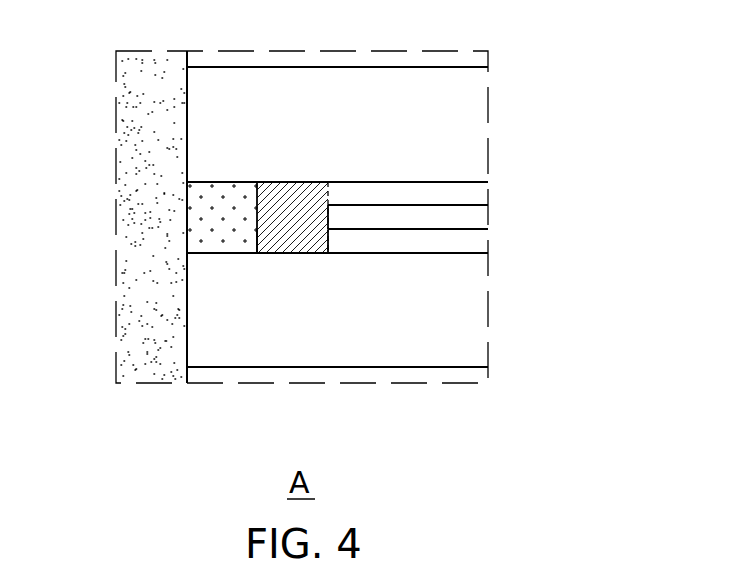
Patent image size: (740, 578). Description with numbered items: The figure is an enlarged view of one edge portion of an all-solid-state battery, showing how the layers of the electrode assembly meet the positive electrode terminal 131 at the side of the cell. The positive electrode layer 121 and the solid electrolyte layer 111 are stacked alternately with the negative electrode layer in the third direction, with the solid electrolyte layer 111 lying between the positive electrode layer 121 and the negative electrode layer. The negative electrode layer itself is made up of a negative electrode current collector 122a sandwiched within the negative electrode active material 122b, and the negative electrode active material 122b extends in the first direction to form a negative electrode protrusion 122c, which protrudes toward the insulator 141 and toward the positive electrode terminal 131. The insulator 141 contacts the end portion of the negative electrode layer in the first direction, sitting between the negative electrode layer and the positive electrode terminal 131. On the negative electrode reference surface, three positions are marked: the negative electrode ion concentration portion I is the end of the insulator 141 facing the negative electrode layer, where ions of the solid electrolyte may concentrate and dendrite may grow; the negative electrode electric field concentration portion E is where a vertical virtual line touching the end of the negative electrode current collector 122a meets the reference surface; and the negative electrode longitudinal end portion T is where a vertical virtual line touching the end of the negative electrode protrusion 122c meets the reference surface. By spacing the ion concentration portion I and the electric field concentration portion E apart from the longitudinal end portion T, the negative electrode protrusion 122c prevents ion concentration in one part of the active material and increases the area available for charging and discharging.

The positive electrode layer 121 is at (515, 375).
The solid electrolyte layer 111 is at (515, 316).
The negative electrode active material 122b is at (481, 192).
The negative electrode current collector 122a is at (445, 218).
The negative electrode protrusion 122c is at (303, 237).
The positive electrode terminal 131 is at (137, 211).
The insulator 141 is at (202, 238).
The negative electrode ion concentration portion I is at (257, 253).
The negative electrode electric field concentration portion E is at (328, 253).
The negative electrode longitudinal end portion T is at (258, 253).